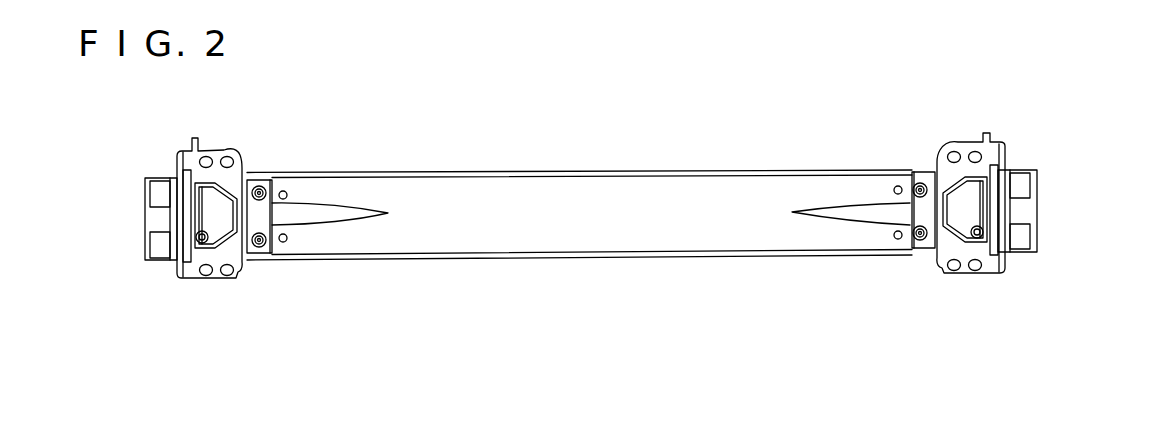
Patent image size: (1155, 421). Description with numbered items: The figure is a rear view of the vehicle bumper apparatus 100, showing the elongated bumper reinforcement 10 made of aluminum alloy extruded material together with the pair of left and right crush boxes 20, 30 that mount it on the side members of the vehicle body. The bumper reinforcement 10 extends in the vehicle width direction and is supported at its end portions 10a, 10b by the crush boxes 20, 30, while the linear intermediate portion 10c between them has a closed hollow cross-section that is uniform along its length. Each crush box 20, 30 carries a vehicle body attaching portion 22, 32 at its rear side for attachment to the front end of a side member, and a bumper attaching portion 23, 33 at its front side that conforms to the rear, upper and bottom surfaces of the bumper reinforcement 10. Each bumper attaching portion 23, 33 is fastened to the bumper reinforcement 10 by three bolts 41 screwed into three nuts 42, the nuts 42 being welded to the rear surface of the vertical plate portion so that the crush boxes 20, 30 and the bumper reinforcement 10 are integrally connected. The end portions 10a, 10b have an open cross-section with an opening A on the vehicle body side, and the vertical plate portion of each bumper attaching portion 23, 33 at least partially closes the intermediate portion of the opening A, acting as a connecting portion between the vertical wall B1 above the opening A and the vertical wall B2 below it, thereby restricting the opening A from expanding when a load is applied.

The vehicle bumper apparatus 100 is at (500, 157).
The bumper reinforcement 10 is at (617, 169).
The end portion 10a is at (150, 208).
The end portion 10b is at (1033, 190).
The intermediate portion 10c is at (593, 240).
The crush box 20 is at (232, 142).
The vehicle body attaching portion 22 is at (190, 272).
The bumper attaching portion 23 is at (180, 185).
The crush box 30 is at (930, 150).
The vehicle body attaching portion 32 is at (942, 270).
The bumper attaching portion 33 is at (1000, 180).
The bolt 41 is at (195, 238).
The nut 42 is at (200, 232).
The opening A is at (273, 218).
The vertical wall B1 is at (288, 196).
The vertical wall B2 is at (279, 234).